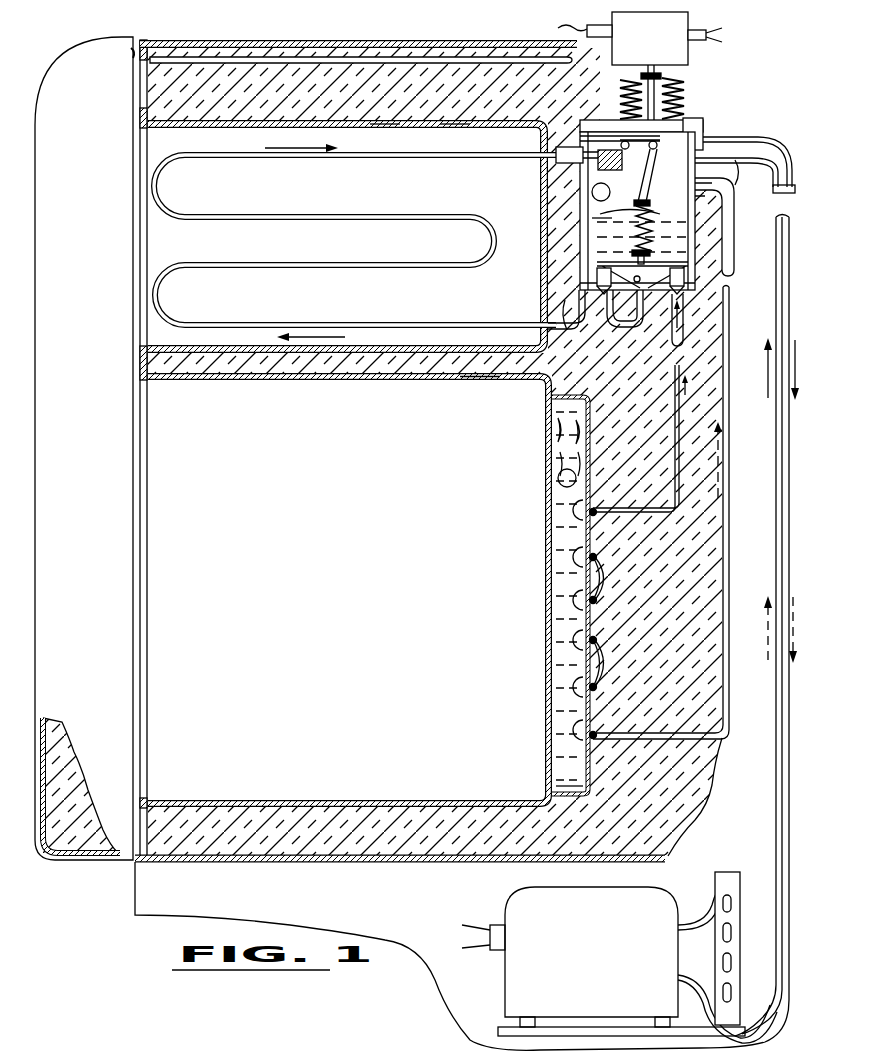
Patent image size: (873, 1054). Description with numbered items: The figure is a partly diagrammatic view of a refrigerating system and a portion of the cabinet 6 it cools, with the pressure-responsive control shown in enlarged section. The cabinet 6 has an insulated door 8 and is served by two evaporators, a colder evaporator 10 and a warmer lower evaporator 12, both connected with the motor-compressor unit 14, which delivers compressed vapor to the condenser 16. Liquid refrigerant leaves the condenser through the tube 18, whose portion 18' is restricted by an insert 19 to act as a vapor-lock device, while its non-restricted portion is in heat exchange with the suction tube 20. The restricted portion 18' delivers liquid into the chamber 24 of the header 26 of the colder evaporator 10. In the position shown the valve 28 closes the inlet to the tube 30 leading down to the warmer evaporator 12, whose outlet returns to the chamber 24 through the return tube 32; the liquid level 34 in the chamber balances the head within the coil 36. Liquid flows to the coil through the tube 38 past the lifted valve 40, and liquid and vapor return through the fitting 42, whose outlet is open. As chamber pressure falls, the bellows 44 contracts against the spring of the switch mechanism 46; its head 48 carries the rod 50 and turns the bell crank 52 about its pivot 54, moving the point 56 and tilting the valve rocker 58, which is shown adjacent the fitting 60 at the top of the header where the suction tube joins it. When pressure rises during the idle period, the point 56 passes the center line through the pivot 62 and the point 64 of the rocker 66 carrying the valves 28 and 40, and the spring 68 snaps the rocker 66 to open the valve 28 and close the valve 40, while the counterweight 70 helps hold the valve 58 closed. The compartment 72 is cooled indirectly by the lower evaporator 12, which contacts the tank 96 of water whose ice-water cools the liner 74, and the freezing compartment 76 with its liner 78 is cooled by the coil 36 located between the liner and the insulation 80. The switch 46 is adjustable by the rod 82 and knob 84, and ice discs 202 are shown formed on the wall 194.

The cabinet 6 is at (376, 36).
The insulated door 8 is at (84, 448).
The colder evaporator 10 is at (545, 235).
The lower evaporator 12 is at (598, 660).
The motor-compressor unit 14 is at (619, 964).
The condenser 16 is at (740, 905).
The tube 18 is at (768, 547).
The restricted portion of tube 18' is at (751, 175).
The insert 19 is at (791, 190).
The suction tube 20 is at (738, 153).
The chamber 24 is at (656, 214).
The header 26 is at (588, 236).
The valve 28 is at (660, 290).
The tube 30 is at (684, 322).
The return tube 32 is at (735, 230).
The liquid level 34 is at (604, 212).
The coil 36 is at (467, 231).
The tube 38 is at (566, 310).
The valve 40 is at (596, 278).
The fitting 42 is at (590, 133).
The bellows 44 is at (685, 107).
The switch mechanism 46 is at (654, 73).
The bellows head 48 is at (683, 78).
The rod 50 is at (683, 92).
The bell crank 52 is at (622, 115).
The pivot 54 is at (622, 122).
The point 56 is at (646, 200).
The valve rocker 58 is at (649, 175).
The fitting 60 is at (696, 131).
The pivot 62 is at (625, 308).
The point 64 is at (652, 253).
The rocker 66 is at (642, 261).
The spring 68 is at (653, 229).
The counterweight 70 is at (601, 192).
The compartment 72 is at (348, 590).
The liner 74 is at (473, 383).
The freezing compartment 76 is at (457, 136).
The liner 78 is at (385, 124).
The insulation 80 is at (435, 451).
The rod 82 is at (522, 58).
The knob 84 is at (130, 52).
The tank 96 is at (560, 572).
The wall 194 is at (592, 774).
The ice discs 202 is at (553, 430).